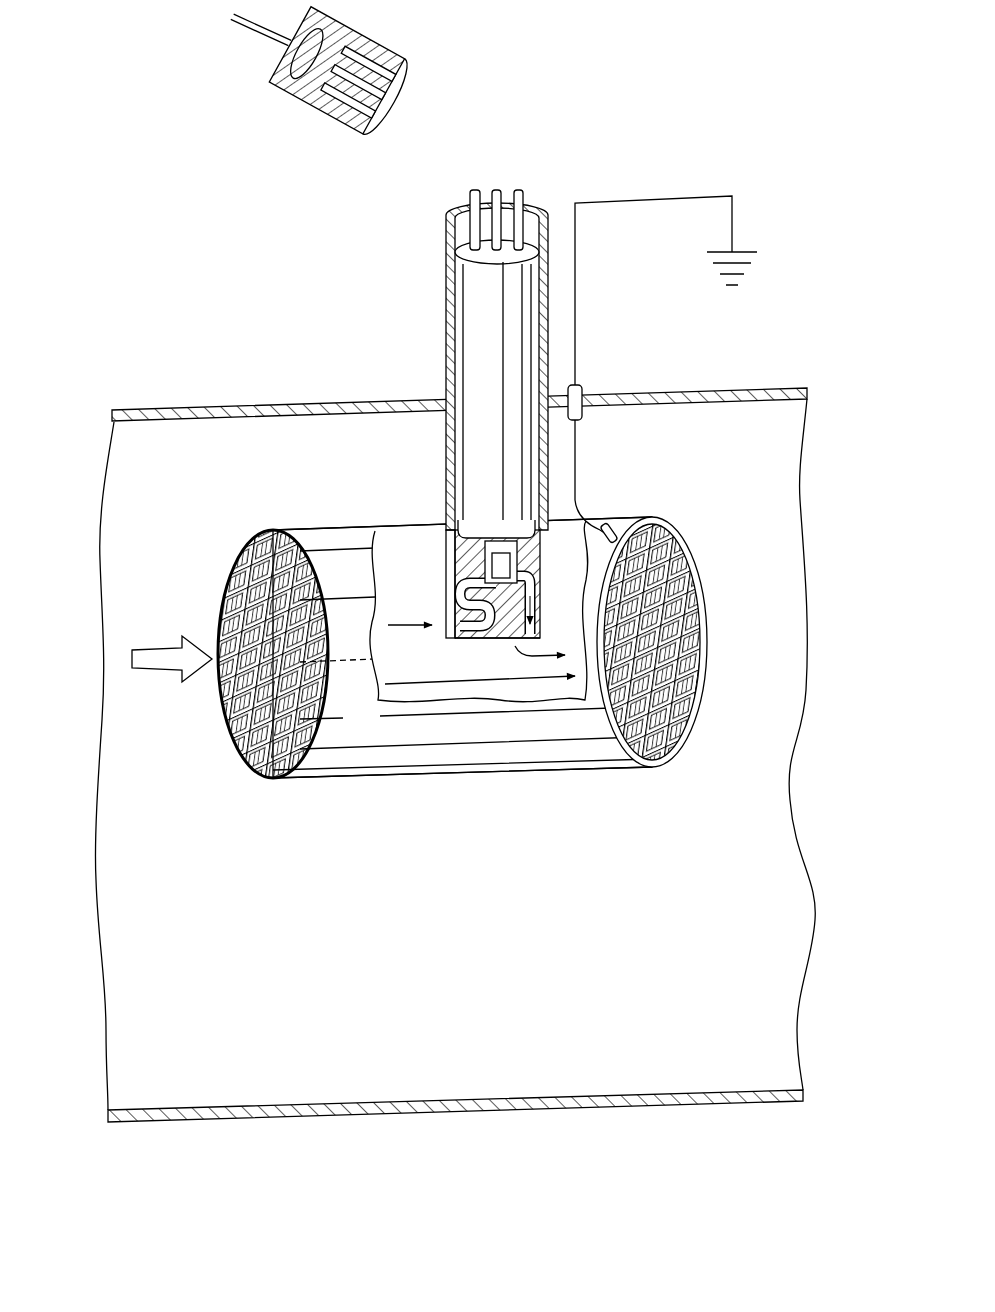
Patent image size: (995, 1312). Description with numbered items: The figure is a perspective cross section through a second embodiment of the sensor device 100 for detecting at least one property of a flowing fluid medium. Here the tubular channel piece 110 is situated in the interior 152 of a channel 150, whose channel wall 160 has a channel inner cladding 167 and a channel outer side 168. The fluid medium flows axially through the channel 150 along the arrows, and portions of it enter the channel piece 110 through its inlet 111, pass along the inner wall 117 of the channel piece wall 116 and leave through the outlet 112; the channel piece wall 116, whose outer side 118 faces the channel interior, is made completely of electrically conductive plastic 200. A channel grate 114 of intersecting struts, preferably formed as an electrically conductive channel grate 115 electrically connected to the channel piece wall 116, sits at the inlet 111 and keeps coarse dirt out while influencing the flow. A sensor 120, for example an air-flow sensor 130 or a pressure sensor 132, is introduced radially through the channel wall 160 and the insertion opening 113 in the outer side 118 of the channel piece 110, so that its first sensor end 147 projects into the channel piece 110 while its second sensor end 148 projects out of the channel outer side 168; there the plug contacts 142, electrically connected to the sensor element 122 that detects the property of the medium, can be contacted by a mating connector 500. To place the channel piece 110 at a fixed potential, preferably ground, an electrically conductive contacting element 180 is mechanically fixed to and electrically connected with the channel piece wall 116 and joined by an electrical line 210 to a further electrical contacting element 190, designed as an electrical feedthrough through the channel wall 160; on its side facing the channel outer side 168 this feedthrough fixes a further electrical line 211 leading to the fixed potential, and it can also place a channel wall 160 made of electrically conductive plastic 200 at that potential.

The sensor device 100 is at (240, 228).
The channel piece 110 is at (580, 726).
The inlet 111 is at (246, 608).
The outlet 112 is at (712, 636).
The insertion opening 113 is at (450, 506).
The channel grate 114 is at (245, 730).
The electrically conductive channel grate 115 is at (251, 654).
The channel piece wall 116 is at (652, 520).
The inner wall 117 is at (392, 762).
The outer side 118 is at (360, 776).
The sensor 120 is at (503, 662).
The sensor element 122 is at (512, 572).
The air-flow sensor 130 is at (613, 700).
The pressure sensor 132 is at (613, 700).
The plug contacts 142 is at (508, 200).
The first sensor end 147 is at (470, 642).
The second sensor end 148 is at (445, 243).
The channel 150 is at (236, 396).
The interior 152 is at (745, 819).
The channel wall 160 is at (352, 1111).
The channel inner cladding 167 is at (230, 1106).
The channel outer side 168 is at (713, 392).
The electrically conductive contacting element 180 is at (615, 524).
The further electrical contacting element 190 is at (582, 392).
The electrically conductive plastic 200 is at (455, 1128).
The electrical line 210 is at (578, 455).
The further electrical line 211 is at (577, 309).
The mating connector 500 is at (415, 97).